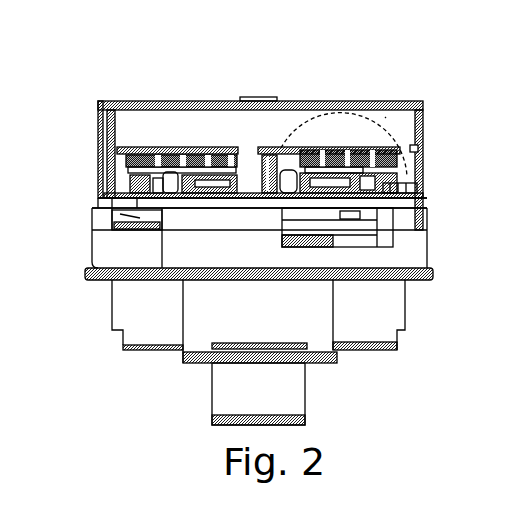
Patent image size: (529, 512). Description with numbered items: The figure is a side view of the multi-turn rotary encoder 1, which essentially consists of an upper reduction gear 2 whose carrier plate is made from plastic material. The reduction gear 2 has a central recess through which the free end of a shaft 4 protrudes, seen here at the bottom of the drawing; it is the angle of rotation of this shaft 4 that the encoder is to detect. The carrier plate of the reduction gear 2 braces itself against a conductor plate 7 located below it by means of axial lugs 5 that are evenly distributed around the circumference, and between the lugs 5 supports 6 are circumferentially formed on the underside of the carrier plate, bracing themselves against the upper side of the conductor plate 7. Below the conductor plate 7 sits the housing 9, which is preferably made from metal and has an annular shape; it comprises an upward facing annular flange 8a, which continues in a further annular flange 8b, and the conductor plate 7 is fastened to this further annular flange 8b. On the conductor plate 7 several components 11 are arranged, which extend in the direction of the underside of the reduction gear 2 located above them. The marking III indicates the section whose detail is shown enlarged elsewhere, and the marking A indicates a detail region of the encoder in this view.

The multi-turn rotary encoder 1 is at (80, 129).
The reduction gear 2 is at (414, 125).
The shaft 4 is at (307, 395).
The axial lugs 5 is at (102, 168).
The supports 6 is at (247, 173).
The conductor plate 7 is at (418, 203).
The annular flange 8a is at (417, 253).
The further annular flange 8b is at (417, 220).
The housing 9 is at (393, 302).
The components 11 is at (428, 186).
The section detail III is at (340, 112).
The detail region A is at (390, 110).